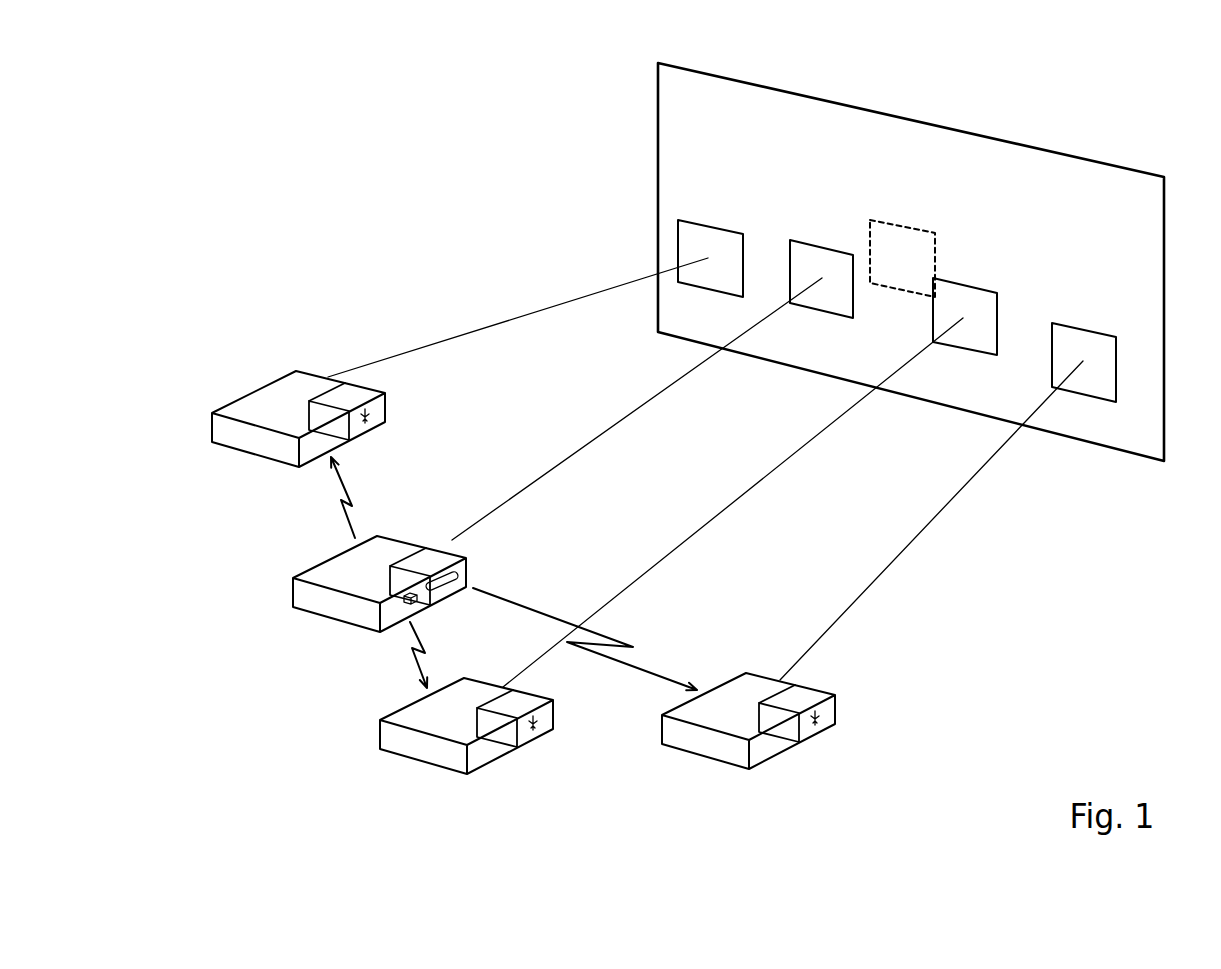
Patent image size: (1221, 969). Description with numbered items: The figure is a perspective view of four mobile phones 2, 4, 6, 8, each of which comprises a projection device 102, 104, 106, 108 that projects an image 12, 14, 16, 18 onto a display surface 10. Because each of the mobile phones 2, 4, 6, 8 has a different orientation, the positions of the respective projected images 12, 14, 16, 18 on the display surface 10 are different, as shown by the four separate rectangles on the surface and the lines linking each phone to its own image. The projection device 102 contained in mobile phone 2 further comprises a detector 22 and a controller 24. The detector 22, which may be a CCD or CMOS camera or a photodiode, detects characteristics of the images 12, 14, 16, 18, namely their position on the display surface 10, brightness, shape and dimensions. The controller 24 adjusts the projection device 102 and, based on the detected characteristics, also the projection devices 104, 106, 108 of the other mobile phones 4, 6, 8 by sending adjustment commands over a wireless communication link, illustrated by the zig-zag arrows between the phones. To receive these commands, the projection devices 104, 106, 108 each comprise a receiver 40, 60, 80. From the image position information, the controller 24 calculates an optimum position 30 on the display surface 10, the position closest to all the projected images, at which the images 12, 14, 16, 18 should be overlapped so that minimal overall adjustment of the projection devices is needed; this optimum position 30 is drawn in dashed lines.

The mobile phone 2 is at (333, 607).
The mobile phone 4 is at (253, 443).
The mobile phone 6 is at (422, 748).
The mobile phone 8 is at (702, 742).
The display surface 10 is at (1138, 455).
The image 12 is at (840, 247).
The image 14 is at (728, 227).
The image 16 is at (980, 285).
The image 18 is at (1097, 330).
The detector 22 is at (462, 587).
The controller 24 is at (435, 607).
The optimum position 30 is at (918, 228).
The receiver 40 is at (377, 425).
The receiver 60 is at (548, 732).
The receiver 80 is at (827, 725).
The projection device 102 is at (440, 557).
The projection device 104 is at (367, 393).
The projection device 106 is at (535, 692).
The projection device 108 is at (810, 690).